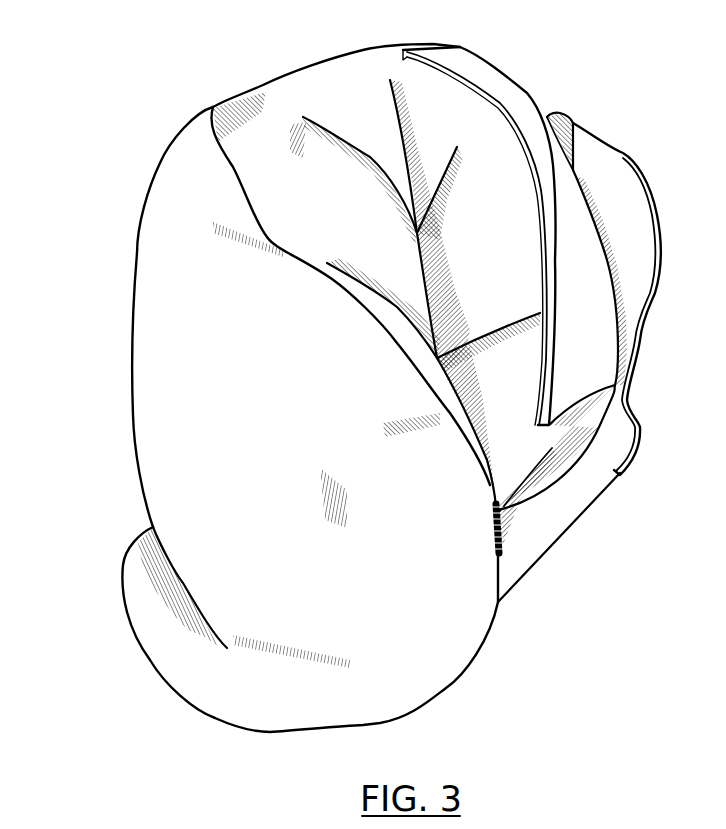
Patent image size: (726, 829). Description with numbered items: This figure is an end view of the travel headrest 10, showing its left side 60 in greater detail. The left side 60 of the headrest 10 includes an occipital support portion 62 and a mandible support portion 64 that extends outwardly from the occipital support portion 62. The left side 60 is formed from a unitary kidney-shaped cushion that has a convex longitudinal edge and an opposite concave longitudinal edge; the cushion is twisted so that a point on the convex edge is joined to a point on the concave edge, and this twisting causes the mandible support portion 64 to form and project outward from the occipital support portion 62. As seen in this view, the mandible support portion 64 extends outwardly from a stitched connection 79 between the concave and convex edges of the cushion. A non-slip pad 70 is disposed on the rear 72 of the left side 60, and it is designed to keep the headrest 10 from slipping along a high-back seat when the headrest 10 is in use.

The headrest 10 is at (92, 97).
The left side 60 is at (137, 253).
The occipital support portion 62 is at (260, 147).
The mandible support portion 64 is at (152, 615).
The non-slip pad 70 is at (512, 98).
The rear 72 is at (480, 253).
The stitched connection 79 is at (500, 542).